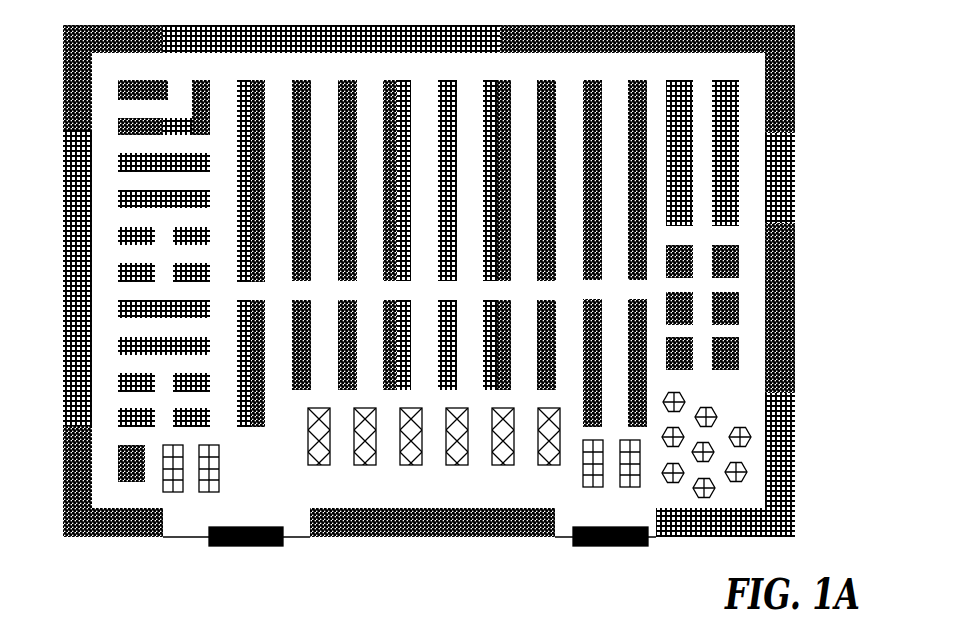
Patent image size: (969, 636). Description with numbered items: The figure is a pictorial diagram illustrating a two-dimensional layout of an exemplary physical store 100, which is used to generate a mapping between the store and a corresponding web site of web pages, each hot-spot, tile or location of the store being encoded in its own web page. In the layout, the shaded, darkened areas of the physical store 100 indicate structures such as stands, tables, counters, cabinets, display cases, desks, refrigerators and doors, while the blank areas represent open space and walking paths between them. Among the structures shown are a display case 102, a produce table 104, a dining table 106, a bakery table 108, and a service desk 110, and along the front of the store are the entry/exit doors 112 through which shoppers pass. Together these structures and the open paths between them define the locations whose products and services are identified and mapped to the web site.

The physical store 100 is at (795, 38).
The display case 102 is at (237, 184).
The produce table 104 is at (118, 265).
The dining table 106 is at (752, 428).
The bakery table 108 is at (740, 258).
The service desk 110 is at (392, 537).
The entry/exit doors 112 is at (250, 545).